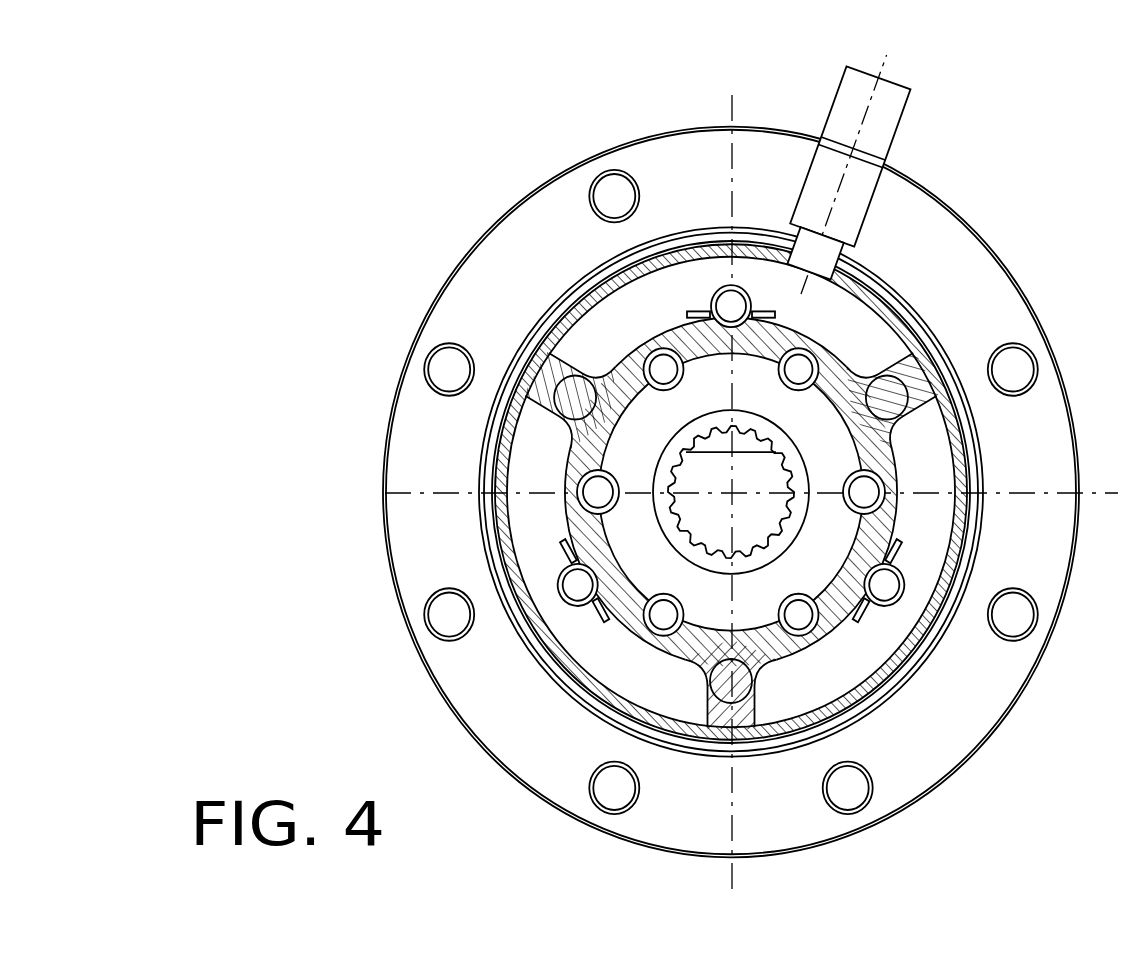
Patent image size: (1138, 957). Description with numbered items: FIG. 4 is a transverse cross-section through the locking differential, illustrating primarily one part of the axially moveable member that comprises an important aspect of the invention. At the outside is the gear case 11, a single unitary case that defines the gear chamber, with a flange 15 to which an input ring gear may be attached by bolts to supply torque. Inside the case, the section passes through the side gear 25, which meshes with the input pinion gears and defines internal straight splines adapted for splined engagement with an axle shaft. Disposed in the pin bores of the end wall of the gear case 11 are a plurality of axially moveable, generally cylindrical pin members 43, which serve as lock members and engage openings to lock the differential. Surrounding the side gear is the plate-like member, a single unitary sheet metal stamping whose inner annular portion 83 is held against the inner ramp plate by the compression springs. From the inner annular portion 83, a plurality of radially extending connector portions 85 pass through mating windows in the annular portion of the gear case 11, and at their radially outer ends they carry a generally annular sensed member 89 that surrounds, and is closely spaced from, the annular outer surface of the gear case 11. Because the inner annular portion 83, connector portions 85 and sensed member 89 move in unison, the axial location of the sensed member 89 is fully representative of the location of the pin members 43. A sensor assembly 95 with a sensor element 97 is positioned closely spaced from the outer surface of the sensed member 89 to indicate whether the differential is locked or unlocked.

The gear case 11 is at (967, 485).
The flange 15 is at (498, 288).
The side gear 25 is at (792, 453).
The pin member 43 is at (800, 378).
The inner annular portion 83 is at (600, 590).
The connector portion 85 is at (553, 367).
The annular sensed member 89 is at (905, 648).
The sensor assembly 95 is at (822, 101).
The sensor element 97 is at (828, 283).